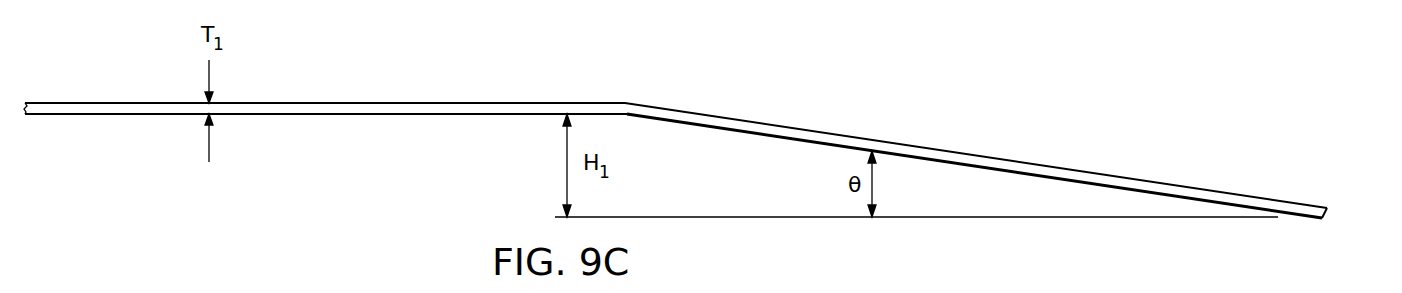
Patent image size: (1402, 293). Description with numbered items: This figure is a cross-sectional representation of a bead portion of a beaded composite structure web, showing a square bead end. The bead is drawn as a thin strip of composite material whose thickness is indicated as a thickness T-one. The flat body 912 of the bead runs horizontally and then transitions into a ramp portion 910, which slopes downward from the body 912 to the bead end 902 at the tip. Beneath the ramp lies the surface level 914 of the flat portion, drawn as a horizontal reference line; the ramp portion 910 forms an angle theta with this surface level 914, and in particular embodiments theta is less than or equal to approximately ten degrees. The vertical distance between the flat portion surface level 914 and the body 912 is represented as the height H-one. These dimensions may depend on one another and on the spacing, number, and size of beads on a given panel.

The bead end 902 is at (1328, 210).
The ramp portion 910 is at (790, 127).
The body 912 is at (368, 103).
The surface level of the flat portion 914 is at (914, 218).